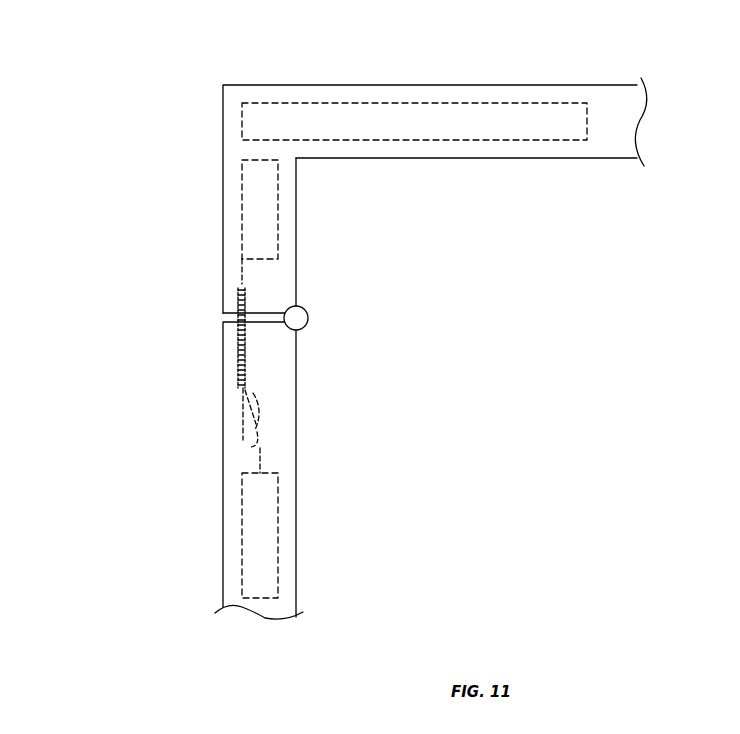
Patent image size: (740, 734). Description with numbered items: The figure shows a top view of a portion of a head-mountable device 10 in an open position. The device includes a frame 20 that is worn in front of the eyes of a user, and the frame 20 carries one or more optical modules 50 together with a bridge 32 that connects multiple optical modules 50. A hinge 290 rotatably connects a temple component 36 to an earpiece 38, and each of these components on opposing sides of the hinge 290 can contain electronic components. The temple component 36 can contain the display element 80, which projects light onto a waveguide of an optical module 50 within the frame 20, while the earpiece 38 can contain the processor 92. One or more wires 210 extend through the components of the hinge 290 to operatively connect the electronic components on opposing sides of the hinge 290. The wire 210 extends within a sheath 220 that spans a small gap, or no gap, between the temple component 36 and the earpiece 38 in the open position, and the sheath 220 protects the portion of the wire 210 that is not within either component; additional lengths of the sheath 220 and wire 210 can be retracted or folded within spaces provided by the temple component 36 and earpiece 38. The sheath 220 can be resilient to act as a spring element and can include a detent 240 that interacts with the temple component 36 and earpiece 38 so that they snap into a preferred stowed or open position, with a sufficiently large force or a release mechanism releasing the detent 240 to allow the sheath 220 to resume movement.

The head-mountable device 10 is at (108, 24).
The frame 20 is at (247, 85).
The bridge 32 is at (605, 85).
The temple component 36 is at (297, 213).
The earpiece 38 is at (297, 505).
The optical module 50 is at (438, 103).
The display element 80 is at (241, 212).
The processor 92 is at (279, 555).
The wire 210 is at (241, 278).
The sheath 220 is at (239, 353).
The detent 240 is at (239, 392).
The hinge 290 is at (309, 320).